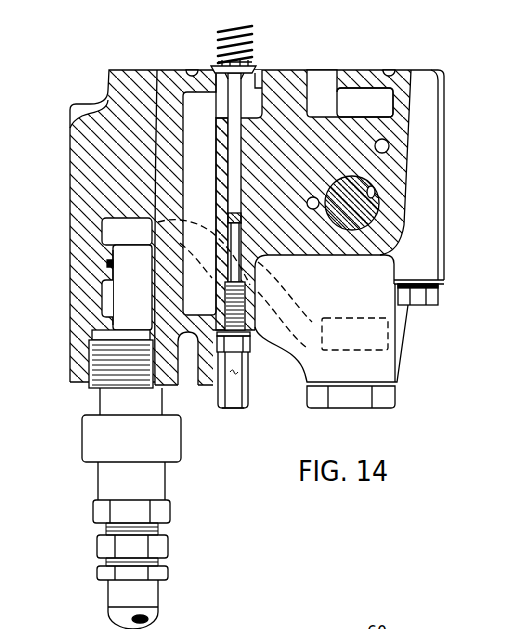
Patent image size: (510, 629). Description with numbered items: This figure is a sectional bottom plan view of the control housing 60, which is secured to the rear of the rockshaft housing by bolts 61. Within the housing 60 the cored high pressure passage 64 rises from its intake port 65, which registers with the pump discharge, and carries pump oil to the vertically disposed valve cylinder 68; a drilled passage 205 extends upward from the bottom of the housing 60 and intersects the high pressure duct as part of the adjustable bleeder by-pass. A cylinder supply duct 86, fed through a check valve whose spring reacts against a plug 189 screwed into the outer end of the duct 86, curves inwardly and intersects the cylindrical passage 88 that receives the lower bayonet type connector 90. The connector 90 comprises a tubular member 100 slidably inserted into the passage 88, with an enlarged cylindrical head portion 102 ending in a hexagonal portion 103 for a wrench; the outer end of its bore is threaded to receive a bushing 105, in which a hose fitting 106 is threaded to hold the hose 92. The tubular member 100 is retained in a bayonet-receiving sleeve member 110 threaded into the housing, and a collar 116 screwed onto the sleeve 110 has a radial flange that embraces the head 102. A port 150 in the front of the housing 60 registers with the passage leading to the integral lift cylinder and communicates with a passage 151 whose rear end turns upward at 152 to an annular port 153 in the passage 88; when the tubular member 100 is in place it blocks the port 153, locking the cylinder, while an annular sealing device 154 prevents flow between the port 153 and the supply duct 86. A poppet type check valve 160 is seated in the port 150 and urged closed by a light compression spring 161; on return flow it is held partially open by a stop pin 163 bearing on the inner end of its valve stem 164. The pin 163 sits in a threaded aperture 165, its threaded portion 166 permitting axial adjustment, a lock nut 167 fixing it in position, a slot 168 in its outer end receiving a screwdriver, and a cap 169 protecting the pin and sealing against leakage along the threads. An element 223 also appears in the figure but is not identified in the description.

The control housing 60 is at (72, 205).
The bolts 61 is at (418, 305).
The cored high pressure passage 64 is at (360, 100).
The intake port 65 is at (313, 78).
The valve cylinder 68 is at (375, 200).
The cylinder supply duct 86 is at (340, 320).
The cylindrical passage 88 is at (127, 232).
The bayonet type connector 90 is at (190, 511).
The hose 92 is at (148, 612).
The tubular member 100 is at (148, 305).
The enlarged cylindrical head portion 102 is at (152, 479).
The hexagonal portion 103 is at (162, 518).
The bushing 105 is at (100, 546).
The hose fitting 106 is at (160, 572).
The bayonet-receiving sleeve member 110 is at (143, 404).
The collar 116 is at (176, 439).
The port 150 is at (221, 83).
The passage 151 is at (205, 180).
The upturned passage portion 152 is at (206, 224).
The annular port 153 is at (103, 297).
The annular sealing device 154 is at (113, 264).
The check valve 160 is at (245, 71).
The light compression spring 161 is at (217, 33).
The stop pin 163 is at (235, 240).
The valve stem 164 is at (230, 191).
The aperture 165 is at (250, 287).
The threaded portion 166 is at (250, 326).
The lock nut 167 is at (247, 342).
The slot 168 is at (234, 372).
The cap 169 is at (234, 406).
The plug 189 is at (362, 406).
The drilled passage 205 is at (389, 147).
The hole 223 is at (311, 209).